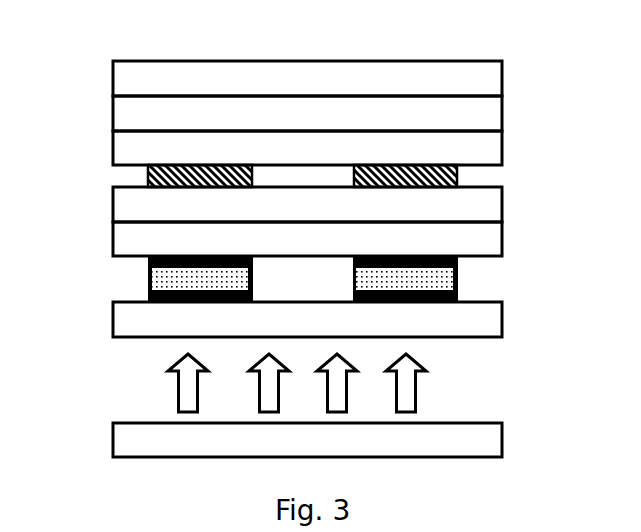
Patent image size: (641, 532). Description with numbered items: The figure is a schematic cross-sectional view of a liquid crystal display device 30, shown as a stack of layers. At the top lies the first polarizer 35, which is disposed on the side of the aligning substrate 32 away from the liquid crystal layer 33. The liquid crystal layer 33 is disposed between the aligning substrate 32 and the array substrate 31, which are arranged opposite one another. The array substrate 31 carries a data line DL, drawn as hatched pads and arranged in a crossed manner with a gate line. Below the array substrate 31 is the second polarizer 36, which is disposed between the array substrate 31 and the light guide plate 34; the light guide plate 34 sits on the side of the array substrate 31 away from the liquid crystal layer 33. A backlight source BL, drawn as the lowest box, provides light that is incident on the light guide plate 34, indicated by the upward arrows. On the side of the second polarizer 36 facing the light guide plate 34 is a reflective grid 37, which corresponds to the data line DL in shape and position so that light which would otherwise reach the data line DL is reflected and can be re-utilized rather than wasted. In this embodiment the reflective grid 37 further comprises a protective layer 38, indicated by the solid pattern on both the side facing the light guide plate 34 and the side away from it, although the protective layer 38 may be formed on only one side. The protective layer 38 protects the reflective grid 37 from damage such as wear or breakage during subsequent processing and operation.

The liquid crystal display device 30 is at (304, 177).
The first polarizer 35 is at (307, 78).
The aligning substrate 32 is at (307, 113).
The liquid crystal layer 33 is at (307, 148).
The data line DL is at (420, 176).
The array substrate 31 is at (307, 204).
The second polarizer 36 is at (307, 239).
The reflective grid 37 is at (195, 277).
The protective layer 38 is at (458, 296).
The light guide plate 34 is at (307, 319).
The backlight source BL is at (307, 440).